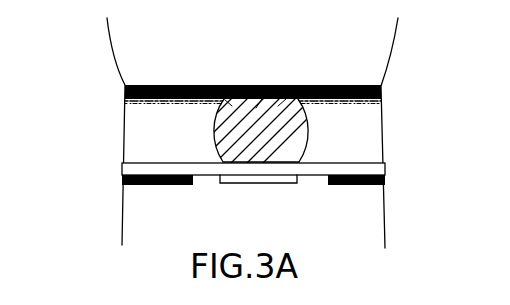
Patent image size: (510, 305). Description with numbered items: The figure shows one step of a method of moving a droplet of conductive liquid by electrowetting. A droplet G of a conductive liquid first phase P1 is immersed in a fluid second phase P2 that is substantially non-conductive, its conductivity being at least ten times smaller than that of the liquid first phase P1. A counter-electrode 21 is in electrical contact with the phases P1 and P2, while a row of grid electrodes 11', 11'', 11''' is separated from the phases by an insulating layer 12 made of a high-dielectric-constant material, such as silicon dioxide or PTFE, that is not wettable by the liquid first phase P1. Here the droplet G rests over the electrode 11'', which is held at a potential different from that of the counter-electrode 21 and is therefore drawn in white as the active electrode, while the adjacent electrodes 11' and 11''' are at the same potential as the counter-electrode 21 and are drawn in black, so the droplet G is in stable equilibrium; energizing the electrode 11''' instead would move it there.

The counter-electrode 21 is at (152, 85).
The liquid first phase P1 is at (275, 85).
The fluid second phase P2 is at (142, 118).
The droplet G is at (250, 85).
The insulating layer 12 is at (141, 162).
The electrode 11' is at (157, 214).
The electrode 11'' is at (258, 202).
The electrode 11''' is at (356, 220).